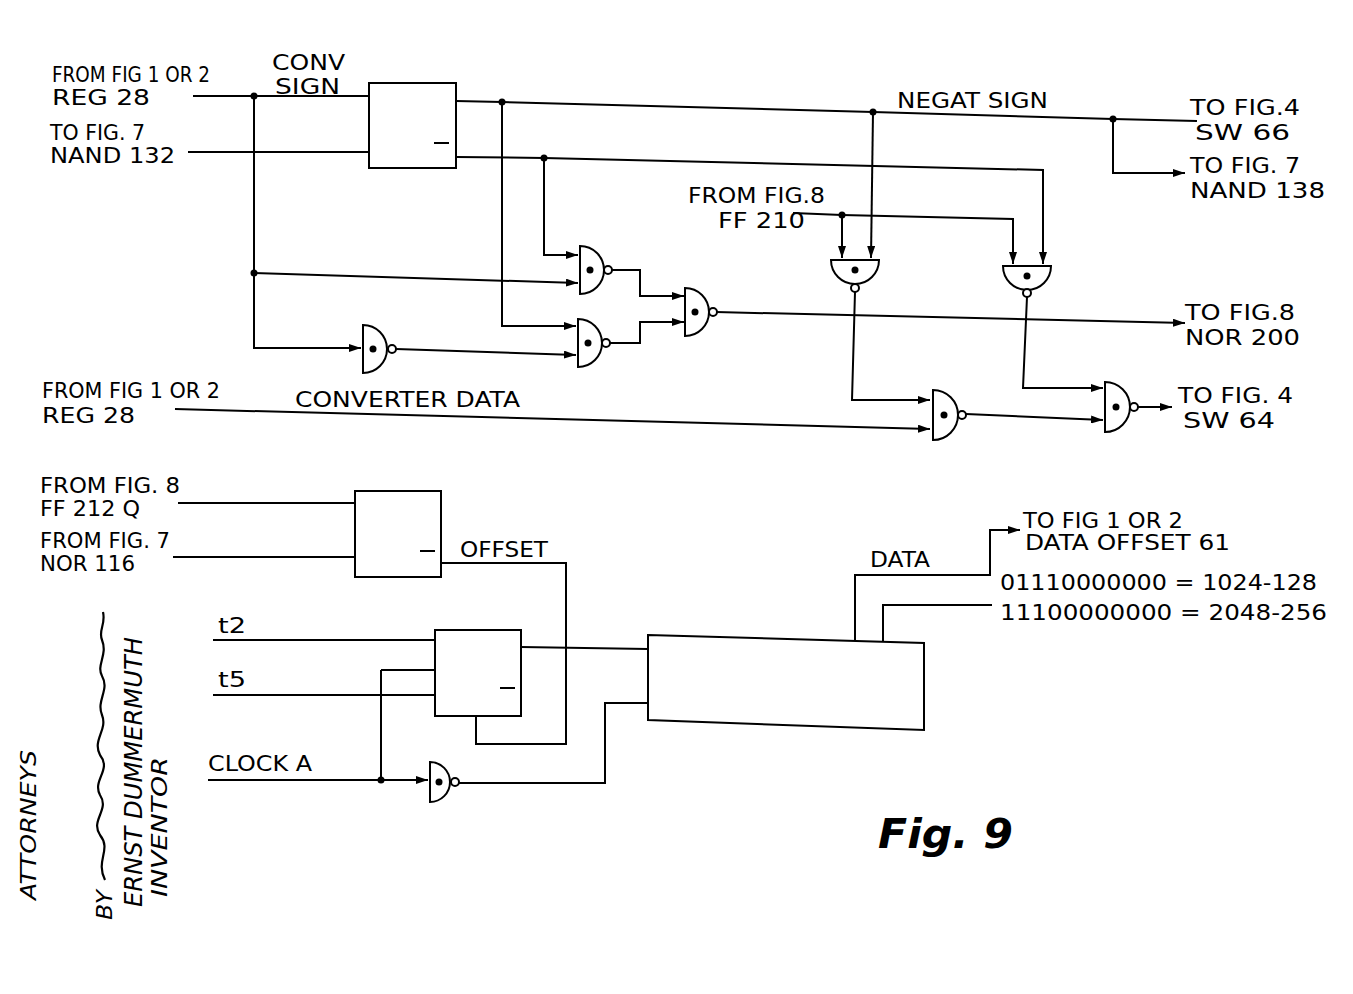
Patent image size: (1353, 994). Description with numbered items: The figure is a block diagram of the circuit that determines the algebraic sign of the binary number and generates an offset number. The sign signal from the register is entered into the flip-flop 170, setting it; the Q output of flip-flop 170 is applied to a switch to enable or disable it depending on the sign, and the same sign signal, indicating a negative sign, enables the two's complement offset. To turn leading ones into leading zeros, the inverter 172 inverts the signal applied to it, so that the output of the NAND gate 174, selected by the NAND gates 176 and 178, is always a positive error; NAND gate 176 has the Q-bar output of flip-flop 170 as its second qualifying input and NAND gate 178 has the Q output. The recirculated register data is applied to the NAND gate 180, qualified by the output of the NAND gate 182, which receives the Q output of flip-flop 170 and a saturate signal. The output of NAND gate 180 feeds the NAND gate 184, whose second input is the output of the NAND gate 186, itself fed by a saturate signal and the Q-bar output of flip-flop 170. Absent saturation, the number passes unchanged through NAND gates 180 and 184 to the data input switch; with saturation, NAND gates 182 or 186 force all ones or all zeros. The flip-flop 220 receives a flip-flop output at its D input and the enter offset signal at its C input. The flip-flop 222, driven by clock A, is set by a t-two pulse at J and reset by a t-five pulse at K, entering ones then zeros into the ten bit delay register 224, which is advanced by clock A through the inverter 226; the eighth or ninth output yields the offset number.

The flip-flop 170 is at (431, 85).
The inverter 172 is at (375, 325).
The NAND gate 174 is at (695, 288).
The NAND gate 176 is at (588, 246).
The NAND gate 178 is at (595, 310).
The NAND gate 180 is at (940, 392).
The NAND gate 182 is at (879, 265).
The NAND gate 184 is at (1112, 384).
The NAND gate 186 is at (1051, 271).
The flip-flop 220 is at (405, 490).
The flip-flop 222 is at (485, 630).
The 10 bit delay register 224 is at (700, 636).
The inverter 226 is at (447, 762).